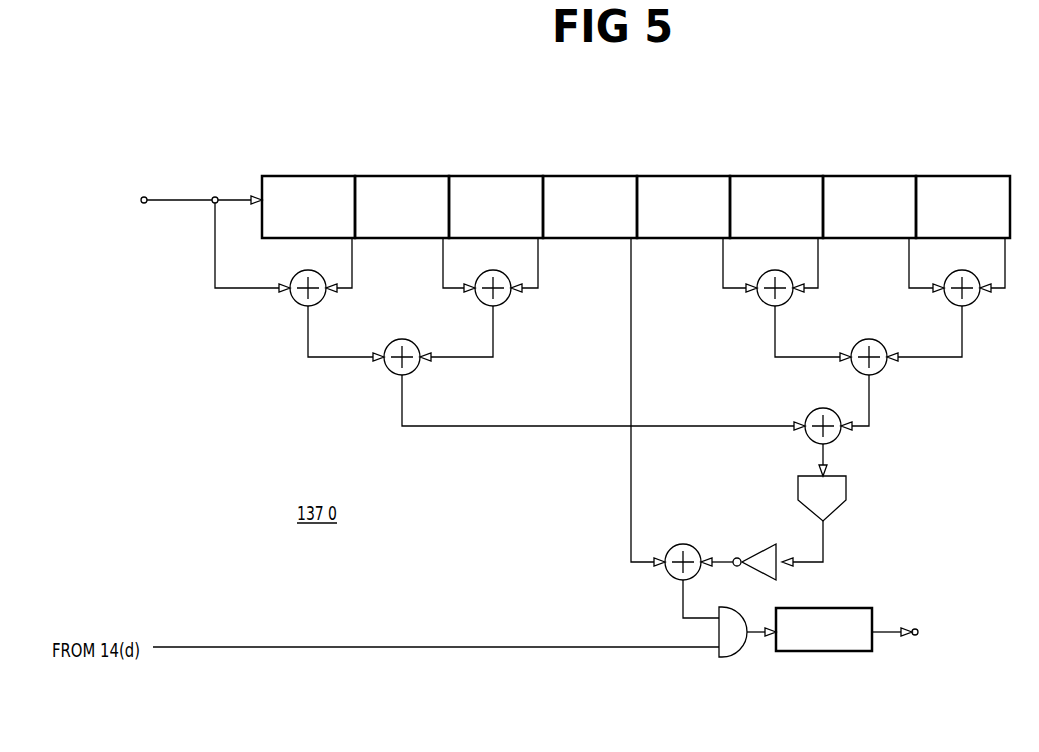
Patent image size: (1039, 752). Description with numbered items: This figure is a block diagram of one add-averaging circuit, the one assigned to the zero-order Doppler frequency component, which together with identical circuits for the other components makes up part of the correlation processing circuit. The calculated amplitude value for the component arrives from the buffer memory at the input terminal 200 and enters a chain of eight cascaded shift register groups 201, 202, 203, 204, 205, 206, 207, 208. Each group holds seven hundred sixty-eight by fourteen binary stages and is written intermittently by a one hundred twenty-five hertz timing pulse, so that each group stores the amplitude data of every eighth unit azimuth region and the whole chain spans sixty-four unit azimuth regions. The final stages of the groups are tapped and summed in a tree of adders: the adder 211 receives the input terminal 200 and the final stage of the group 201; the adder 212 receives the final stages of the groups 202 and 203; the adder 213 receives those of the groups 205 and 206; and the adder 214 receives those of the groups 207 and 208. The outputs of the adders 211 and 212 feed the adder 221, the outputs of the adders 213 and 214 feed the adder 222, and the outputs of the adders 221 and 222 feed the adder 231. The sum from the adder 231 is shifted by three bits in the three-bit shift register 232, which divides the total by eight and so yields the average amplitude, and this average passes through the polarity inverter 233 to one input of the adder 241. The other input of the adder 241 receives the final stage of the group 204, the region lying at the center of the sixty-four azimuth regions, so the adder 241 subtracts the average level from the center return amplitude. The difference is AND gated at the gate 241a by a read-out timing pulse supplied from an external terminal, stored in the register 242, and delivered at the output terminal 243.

The input terminal 200 is at (145, 197).
The shift register group 201 is at (309, 176).
The shift register group 202 is at (399, 176).
The shift register group 203 is at (494, 176).
The shift register group 204 is at (588, 176).
The shift register group 205 is at (676, 176).
The shift register group 206 is at (774, 176).
The shift register group 207 is at (866, 176).
The shift register group 208 is at (958, 176).
The adder 211 is at (296, 304).
The adder 212 is at (511, 304).
The adder 213 is at (760, 304).
The adder 214 is at (975, 304).
The adder 221 is at (388, 370).
The adder 222 is at (883, 370).
The adder 231 is at (808, 413).
The 3-bit shift register 232 is at (838, 503).
The polarity inverter 233 is at (760, 550).
The adder 241 is at (673, 548).
The gate 241a is at (733, 658).
The register 242 is at (833, 652).
The output terminal 243 is at (915, 636).